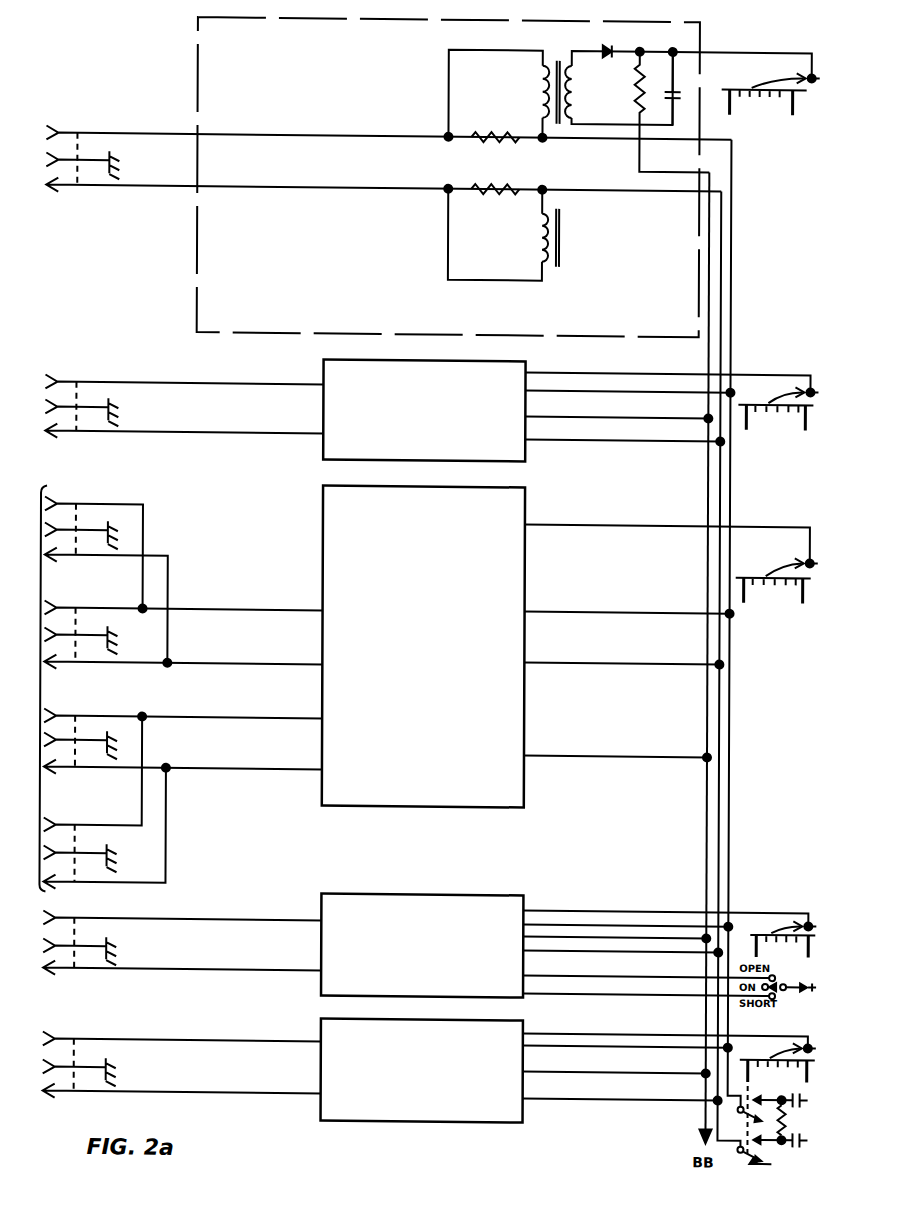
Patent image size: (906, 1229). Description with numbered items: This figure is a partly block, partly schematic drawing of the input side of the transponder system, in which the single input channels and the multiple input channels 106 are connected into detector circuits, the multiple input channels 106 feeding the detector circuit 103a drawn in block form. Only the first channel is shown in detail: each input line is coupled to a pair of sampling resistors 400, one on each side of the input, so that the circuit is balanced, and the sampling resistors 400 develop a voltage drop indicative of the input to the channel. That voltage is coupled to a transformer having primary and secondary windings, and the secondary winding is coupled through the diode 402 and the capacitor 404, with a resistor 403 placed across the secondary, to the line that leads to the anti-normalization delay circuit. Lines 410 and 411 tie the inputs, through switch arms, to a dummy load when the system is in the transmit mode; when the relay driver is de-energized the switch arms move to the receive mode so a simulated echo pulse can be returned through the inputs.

The detector circuit 103a is at (325, 518).
The multiple input channels 106 is at (50, 687).
The sampling resistor 400 is at (512, 177).
The diode 402 is at (610, 51).
The resistor 403 is at (640, 83).
The capacitor 404 is at (682, 82).
The line 410 is at (595, 134).
The line 411 is at (625, 187).